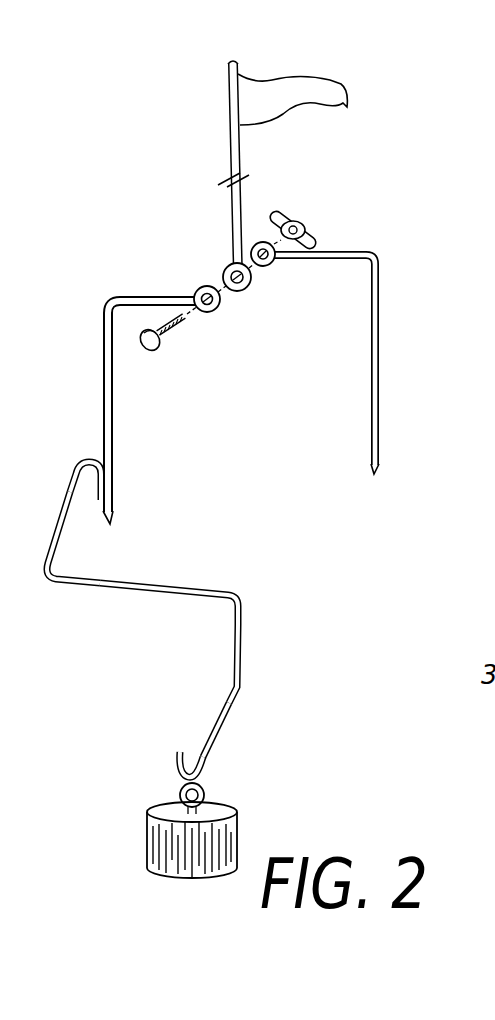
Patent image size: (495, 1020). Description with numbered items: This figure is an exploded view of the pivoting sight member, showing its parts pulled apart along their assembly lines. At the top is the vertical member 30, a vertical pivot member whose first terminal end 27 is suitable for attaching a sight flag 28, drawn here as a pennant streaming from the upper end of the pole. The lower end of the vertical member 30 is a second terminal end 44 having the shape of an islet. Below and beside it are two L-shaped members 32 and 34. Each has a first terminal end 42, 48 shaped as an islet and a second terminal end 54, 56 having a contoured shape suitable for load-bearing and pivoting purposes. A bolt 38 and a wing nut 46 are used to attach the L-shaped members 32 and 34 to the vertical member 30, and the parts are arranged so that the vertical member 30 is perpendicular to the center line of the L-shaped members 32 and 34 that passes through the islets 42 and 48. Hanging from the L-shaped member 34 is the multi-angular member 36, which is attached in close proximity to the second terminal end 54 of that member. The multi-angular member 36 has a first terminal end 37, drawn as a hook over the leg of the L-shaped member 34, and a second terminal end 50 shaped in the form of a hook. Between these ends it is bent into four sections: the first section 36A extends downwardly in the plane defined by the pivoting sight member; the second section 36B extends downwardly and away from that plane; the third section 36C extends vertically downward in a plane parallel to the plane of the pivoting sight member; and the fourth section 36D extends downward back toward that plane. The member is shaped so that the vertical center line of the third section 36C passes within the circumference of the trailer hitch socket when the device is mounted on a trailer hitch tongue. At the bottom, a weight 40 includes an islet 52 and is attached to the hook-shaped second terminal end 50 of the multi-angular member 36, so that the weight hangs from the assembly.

The first terminal end 27 is at (228, 72).
The sight flag 28 is at (340, 83).
The vertical member 30 is at (190, 168).
The L-shaped member 32 is at (368, 352).
The L-shaped member 34 is at (117, 408).
The multi-angular member 36 is at (186, 598).
The first section 36A is at (58, 543).
The second section 36B is at (240, 541).
The third section 36C is at (233, 662).
The fourth section 36D is at (232, 715).
The first terminal end 37 is at (84, 460).
The bolt 38 is at (166, 348).
The weight 40 is at (241, 816).
The first terminal end 42 is at (200, 289).
The second terminal end 44 is at (232, 265).
The wing nut 46 is at (318, 226).
The first terminal end 48 is at (272, 266).
The second terminal end 50 is at (177, 757).
The islet 52 is at (213, 787).
The second terminal end 54 is at (115, 518).
The second terminal end 56 is at (373, 467).